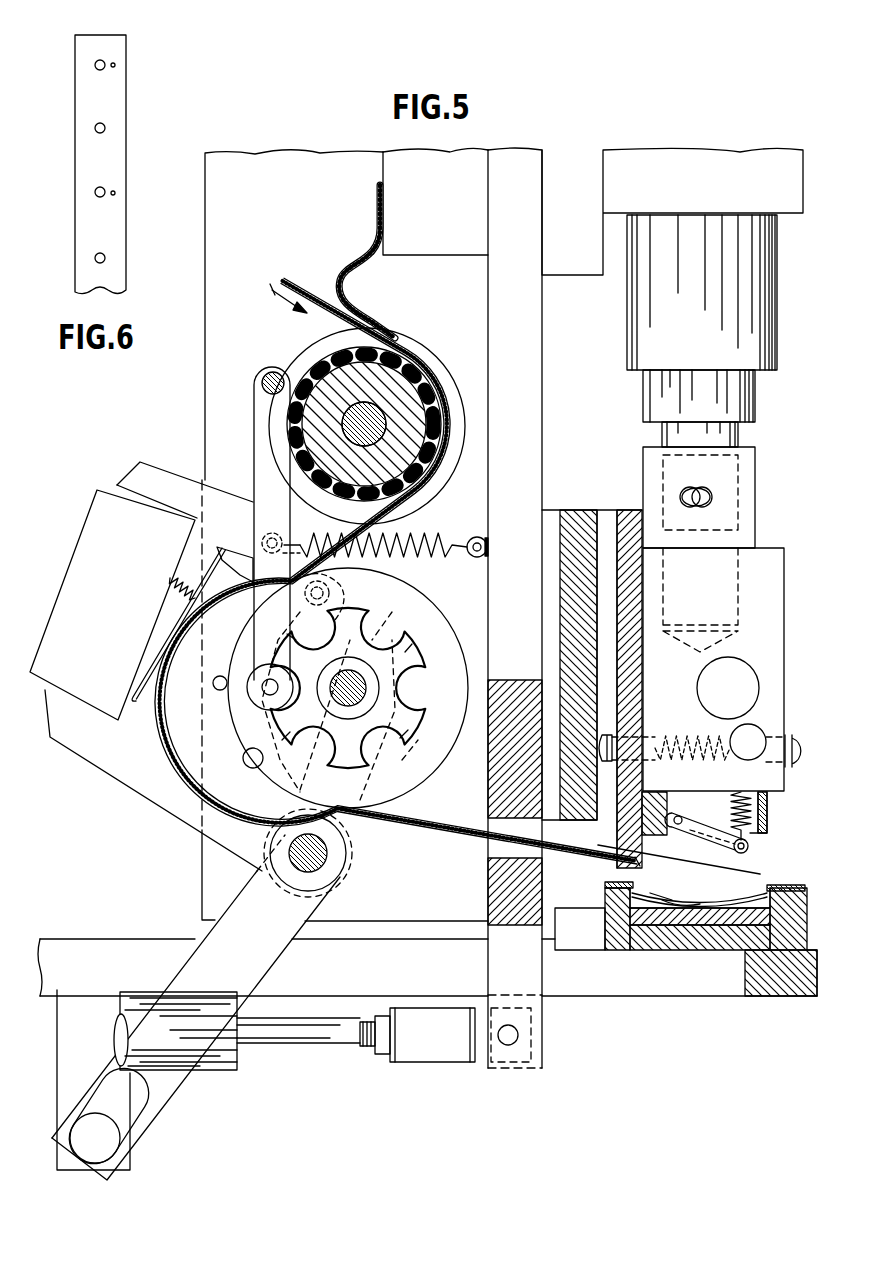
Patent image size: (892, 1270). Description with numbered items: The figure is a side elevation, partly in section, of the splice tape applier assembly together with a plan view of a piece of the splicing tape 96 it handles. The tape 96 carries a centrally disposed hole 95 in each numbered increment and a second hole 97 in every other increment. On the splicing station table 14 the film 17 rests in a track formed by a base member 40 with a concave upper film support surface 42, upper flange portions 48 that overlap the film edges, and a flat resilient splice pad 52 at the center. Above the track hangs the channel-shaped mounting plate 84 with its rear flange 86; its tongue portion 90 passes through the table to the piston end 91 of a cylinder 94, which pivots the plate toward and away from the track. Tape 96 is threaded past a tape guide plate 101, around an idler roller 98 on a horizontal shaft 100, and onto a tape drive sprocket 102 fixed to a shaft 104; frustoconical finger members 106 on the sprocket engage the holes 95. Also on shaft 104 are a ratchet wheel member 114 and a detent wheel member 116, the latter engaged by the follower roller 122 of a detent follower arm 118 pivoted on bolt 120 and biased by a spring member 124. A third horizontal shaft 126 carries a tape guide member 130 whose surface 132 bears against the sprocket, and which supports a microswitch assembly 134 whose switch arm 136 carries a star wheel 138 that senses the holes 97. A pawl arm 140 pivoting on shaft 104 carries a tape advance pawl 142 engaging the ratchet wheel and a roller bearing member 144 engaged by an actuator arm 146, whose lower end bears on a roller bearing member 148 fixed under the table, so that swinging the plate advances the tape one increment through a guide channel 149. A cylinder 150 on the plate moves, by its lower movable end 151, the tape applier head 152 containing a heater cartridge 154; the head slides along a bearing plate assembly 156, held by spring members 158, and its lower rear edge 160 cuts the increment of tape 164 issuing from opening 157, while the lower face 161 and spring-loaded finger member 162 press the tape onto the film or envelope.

In FIG. 5, the splicing station table 14 is at (750, 1000).
In FIG. 5, the film 17 is at (690, 902).
In FIG. 5, the base member 40 is at (620, 948).
In FIG. 5, the upper film support surface 42 is at (720, 896).
In FIG. 5, the upper flange portion 48 is at (612, 884).
In FIG. 5, the resilient splice pad 52 is at (650, 928).
In FIG. 5, the splice applier assembly mounting plate 84 is at (542, 340).
In FIG. 5, the flange 86 is at (285, 207).
In FIG. 5, the tongue portion 90 is at (520, 972).
In FIG. 5, the piston end 91 is at (455, 1040).
In FIG. 5, the hydraulic or pneumatic cylinder 94 is at (237, 1046).
In FIG. 6, the central hole 95 is at (104, 68).
In FIG. 6, the splicing tape 96 is at (115, 152).
In FIG. 5, the splicing tape 96 is at (300, 292).
In FIG. 6, the second hole 97 is at (115, 65).
In FIG. 5, the idler roller 98 is at (418, 345).
In FIG. 5, the horizontal shaft 100 is at (318, 353).
In FIG. 5, the tape guide plate 101 is at (348, 286).
In FIG. 5, the tape drive sprocket 102 is at (414, 616).
In FIG. 5, the shaft 104 is at (380, 688).
In FIG. 5, the finger member 106 is at (420, 588).
In FIG. 5, the ratchet wheel member 114 is at (282, 740).
In FIG. 5, the detent wheel member 116 is at (414, 648).
In FIG. 5, the detent follower arm 118 is at (254, 436).
In FIG. 5, the bolt 120 is at (265, 378).
In FIG. 5, the follower roller 122 is at (262, 700).
In FIG. 5, the spring member 124 is at (412, 540).
In FIG. 5, the third horizontal shaft 126 is at (346, 868).
In FIG. 5, the tape guide member 130 is at (112, 770).
In FIG. 5, the surface 132 is at (248, 768).
In FIG. 5, the microswitch assembly 134 is at (118, 610).
In FIG. 5, the switch arm 136 is at (158, 668).
In FIG. 5, the star wheel 138 is at (245, 555).
In FIG. 5, the pawl arm 140 is at (345, 598).
In FIG. 5, the tape advance pawl 142 is at (287, 634).
In FIG. 5, the roller bearing member 144 is at (410, 733).
In FIG. 5, the actuator arm 146 is at (272, 928).
In FIG. 5, the roller bearing member 148 is at (95, 1150).
In FIG. 5, the guide channel 149 is at (447, 843).
In FIG. 5, the pneumatic or hydraulic cylinder 150 is at (698, 338).
In FIG. 5, the lower movable end 151 is at (745, 538).
In FIG. 5, the tape applier head 152 is at (688, 676).
In FIG. 5, the heater cartridge 154 is at (740, 694).
In FIG. 5, the bearing plate assembly 156 is at (577, 510).
In FIG. 5, the opening 157 is at (640, 852).
In FIG. 5, the spring member 158 is at (680, 762).
In FIG. 5, the lower rear edge 160 is at (665, 840).
In FIG. 5, the lower face 161 is at (755, 826).
In FIG. 5, the spring-loaded finger member 162 is at (748, 850).
In FIG. 5, the increment of tape 164 is at (678, 888).